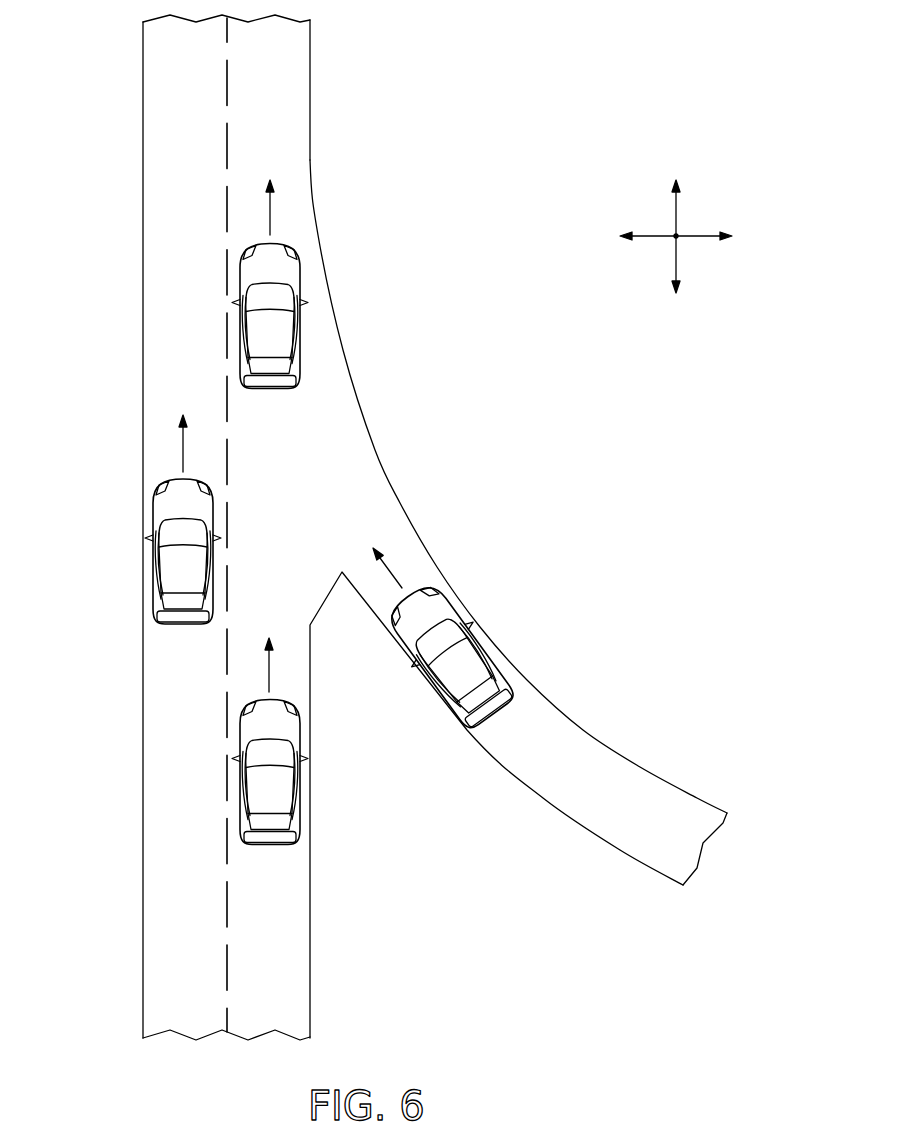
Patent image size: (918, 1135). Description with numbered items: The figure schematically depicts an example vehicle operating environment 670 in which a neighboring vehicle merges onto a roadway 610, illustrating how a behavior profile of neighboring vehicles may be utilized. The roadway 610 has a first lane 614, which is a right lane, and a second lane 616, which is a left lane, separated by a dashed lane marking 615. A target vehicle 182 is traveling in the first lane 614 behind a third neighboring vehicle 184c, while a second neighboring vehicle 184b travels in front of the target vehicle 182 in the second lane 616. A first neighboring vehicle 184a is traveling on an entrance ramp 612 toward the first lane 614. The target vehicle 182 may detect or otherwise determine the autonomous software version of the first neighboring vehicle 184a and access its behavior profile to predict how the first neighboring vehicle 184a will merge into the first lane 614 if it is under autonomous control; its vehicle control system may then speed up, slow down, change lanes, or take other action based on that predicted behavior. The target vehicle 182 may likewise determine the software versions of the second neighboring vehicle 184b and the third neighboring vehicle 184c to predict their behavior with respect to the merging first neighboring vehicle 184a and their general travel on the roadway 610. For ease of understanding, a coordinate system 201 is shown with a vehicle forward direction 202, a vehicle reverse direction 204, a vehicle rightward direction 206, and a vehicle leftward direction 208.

The environment 670 is at (513, 122).
The second lane 616 is at (160, 93).
The first lane 614 is at (293, 82).
The roadway 610 is at (320, 237).
The entrance ramp 612 is at (485, 627).
The lane marking 615 is at (227, 975).
The third neighboring vehicle 184c is at (270, 388).
The second neighboring vehicle 184b is at (183, 622).
The target vehicle 182 is at (268, 843).
The first neighboring vehicle 184a is at (473, 723).
The coordinate system 201 is at (698, 170).
The vehicle forward direction 202 is at (676, 213).
The vehicle reverse direction 204 is at (675, 261).
The vehicle rightward direction 206 is at (698, 238).
The vehicle leftward direction 208 is at (652, 234).